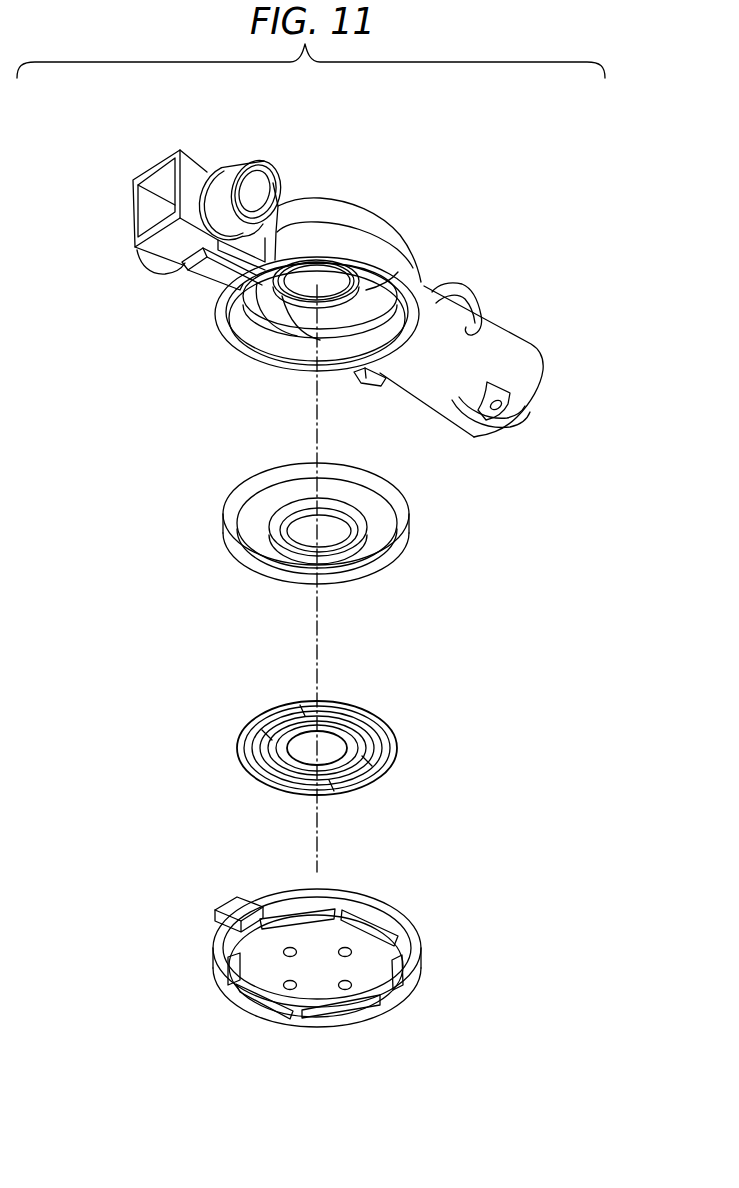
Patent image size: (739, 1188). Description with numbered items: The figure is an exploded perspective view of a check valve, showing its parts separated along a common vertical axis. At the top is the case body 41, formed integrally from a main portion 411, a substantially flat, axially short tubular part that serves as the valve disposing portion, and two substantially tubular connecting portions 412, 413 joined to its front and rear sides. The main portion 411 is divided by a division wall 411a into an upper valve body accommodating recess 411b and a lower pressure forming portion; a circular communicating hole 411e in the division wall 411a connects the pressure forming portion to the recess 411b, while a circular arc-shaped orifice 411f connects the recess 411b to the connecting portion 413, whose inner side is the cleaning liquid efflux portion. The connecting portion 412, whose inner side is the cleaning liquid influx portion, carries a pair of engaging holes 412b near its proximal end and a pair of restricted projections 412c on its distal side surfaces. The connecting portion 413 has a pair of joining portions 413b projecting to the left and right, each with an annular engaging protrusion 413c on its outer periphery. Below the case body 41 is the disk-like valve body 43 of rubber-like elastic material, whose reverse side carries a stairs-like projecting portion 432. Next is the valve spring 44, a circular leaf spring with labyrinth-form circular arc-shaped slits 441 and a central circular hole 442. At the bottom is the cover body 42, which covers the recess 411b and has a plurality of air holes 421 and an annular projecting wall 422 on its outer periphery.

The case body 41 is at (352, 203).
The main portion 411 is at (228, 338).
The division wall 411a is at (395, 282).
The valve body accommodating recess 411b is at (301, 358).
The communicating hole 411e is at (295, 350).
The orifice 411f is at (265, 334).
The connecting portion 412 is at (503, 322).
The engaging holes 412b is at (483, 413).
The restricted projections 412c is at (463, 292).
The connecting portion 413 is at (152, 162).
The joining portions 413b is at (247, 160).
The engaging protrusion 413c is at (183, 148).
The valve body 43 is at (408, 542).
The stairs-like projecting portion 432 is at (300, 535).
The valve spring 44 is at (263, 720).
The slits 441 is at (250, 773).
The circular hole 442 is at (337, 748).
The cover body 42 is at (420, 940).
The air holes 421 is at (291, 948).
The projecting wall 422 is at (360, 892).